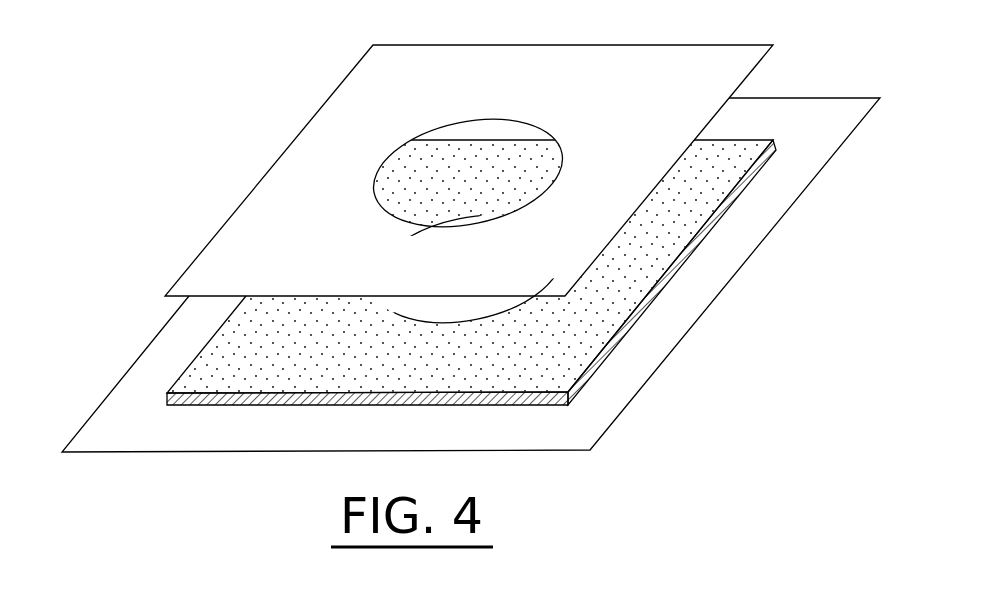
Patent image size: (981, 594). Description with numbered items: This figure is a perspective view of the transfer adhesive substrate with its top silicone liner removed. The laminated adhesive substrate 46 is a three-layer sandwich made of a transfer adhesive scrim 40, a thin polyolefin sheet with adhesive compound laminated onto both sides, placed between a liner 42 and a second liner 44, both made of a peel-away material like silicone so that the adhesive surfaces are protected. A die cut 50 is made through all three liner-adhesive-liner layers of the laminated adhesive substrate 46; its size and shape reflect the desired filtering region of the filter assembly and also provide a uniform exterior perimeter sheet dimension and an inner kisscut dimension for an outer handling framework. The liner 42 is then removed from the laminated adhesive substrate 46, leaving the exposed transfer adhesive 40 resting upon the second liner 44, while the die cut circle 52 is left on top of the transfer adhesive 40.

The transfer adhesive scrim 40 is at (284, 373).
The liner 42 is at (553, 240).
The second liner 44 is at (284, 437).
The laminated substrate scrim 46 is at (617, 295).
The die cut 50 is at (375, 187).
The die cut circle 52 is at (456, 319).